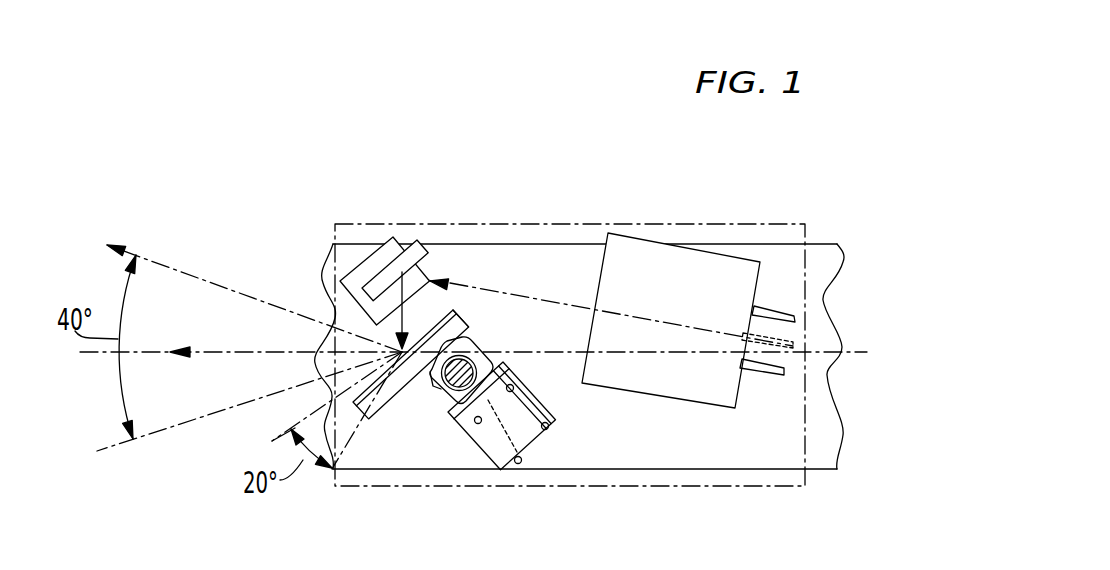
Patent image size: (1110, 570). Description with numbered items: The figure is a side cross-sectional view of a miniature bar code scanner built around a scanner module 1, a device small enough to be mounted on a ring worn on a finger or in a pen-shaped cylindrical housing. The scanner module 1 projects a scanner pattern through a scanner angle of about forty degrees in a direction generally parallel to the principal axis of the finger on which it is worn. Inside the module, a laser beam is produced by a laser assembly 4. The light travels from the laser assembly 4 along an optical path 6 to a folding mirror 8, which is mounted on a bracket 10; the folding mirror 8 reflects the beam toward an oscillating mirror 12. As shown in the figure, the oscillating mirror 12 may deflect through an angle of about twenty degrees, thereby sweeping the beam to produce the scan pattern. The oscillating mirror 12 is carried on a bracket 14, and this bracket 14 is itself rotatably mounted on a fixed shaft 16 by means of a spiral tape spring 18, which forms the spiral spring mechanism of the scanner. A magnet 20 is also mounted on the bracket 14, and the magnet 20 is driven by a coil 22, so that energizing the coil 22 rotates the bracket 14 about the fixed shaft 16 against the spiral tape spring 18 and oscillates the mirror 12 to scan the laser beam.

The scanner module 1 is at (742, 235).
The laser assembly 4 is at (757, 287).
The optical path 6 is at (566, 304).
The folding mirror 8 is at (421, 240).
The bracket 10 is at (381, 247).
The oscillating mirror 12 is at (453, 309).
The bracket 14 is at (488, 352).
The fixed shaft 16 is at (441, 380).
The spiral tape spring 18 is at (470, 332).
The magnet 20 is at (450, 417).
The coil 22 is at (498, 470).